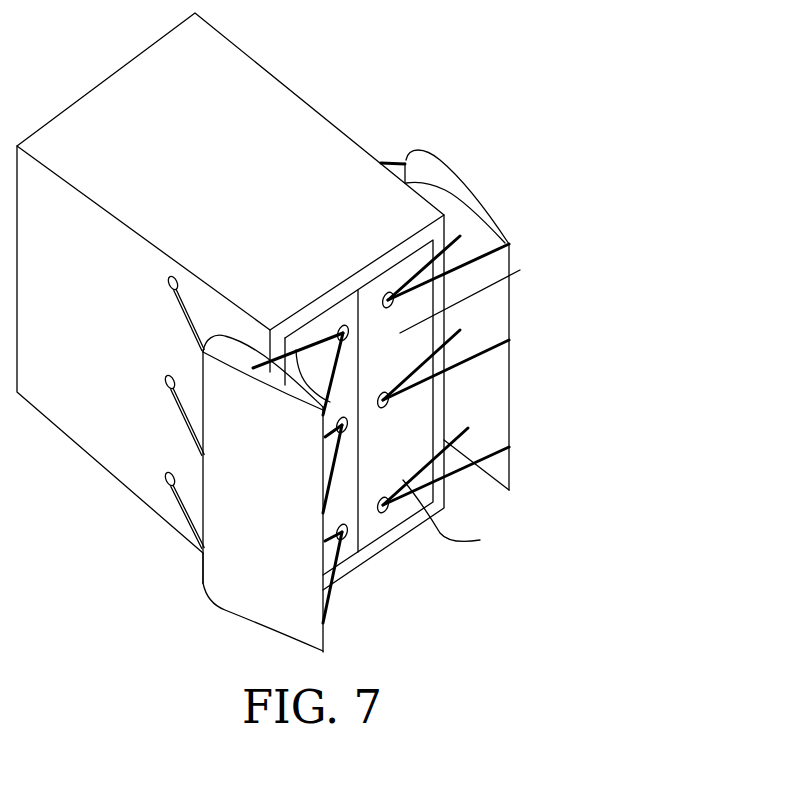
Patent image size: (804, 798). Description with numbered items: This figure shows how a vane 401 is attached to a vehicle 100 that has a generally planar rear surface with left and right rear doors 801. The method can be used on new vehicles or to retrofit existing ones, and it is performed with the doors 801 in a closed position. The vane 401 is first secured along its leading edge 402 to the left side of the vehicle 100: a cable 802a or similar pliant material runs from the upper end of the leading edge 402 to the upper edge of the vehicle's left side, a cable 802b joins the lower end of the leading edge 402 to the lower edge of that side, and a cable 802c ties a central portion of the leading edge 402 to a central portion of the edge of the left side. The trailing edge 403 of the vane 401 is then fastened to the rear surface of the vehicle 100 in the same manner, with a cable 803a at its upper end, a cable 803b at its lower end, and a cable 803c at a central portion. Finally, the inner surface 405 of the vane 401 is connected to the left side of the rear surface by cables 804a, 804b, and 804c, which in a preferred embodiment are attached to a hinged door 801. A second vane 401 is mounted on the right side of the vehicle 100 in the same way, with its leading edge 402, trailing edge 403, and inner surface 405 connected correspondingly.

The vehicle 100 is at (291, 91).
The vane 401 is at (510, 417).
The leading edge 402 is at (203, 571).
The trailing edge 403 is at (510, 297).
The inner surface 405 is at (453, 207).
The doors 801 is at (335, 315).
The cable 802a is at (403, 160).
The cable 802b is at (173, 485).
The cable 802c is at (181, 405).
The cable 803a is at (482, 255).
The cable 803b is at (460, 471).
The cable 803c is at (482, 350).
The cable 804a is at (425, 268).
The cable 804b is at (357, 552).
The cable 804c is at (420, 365).